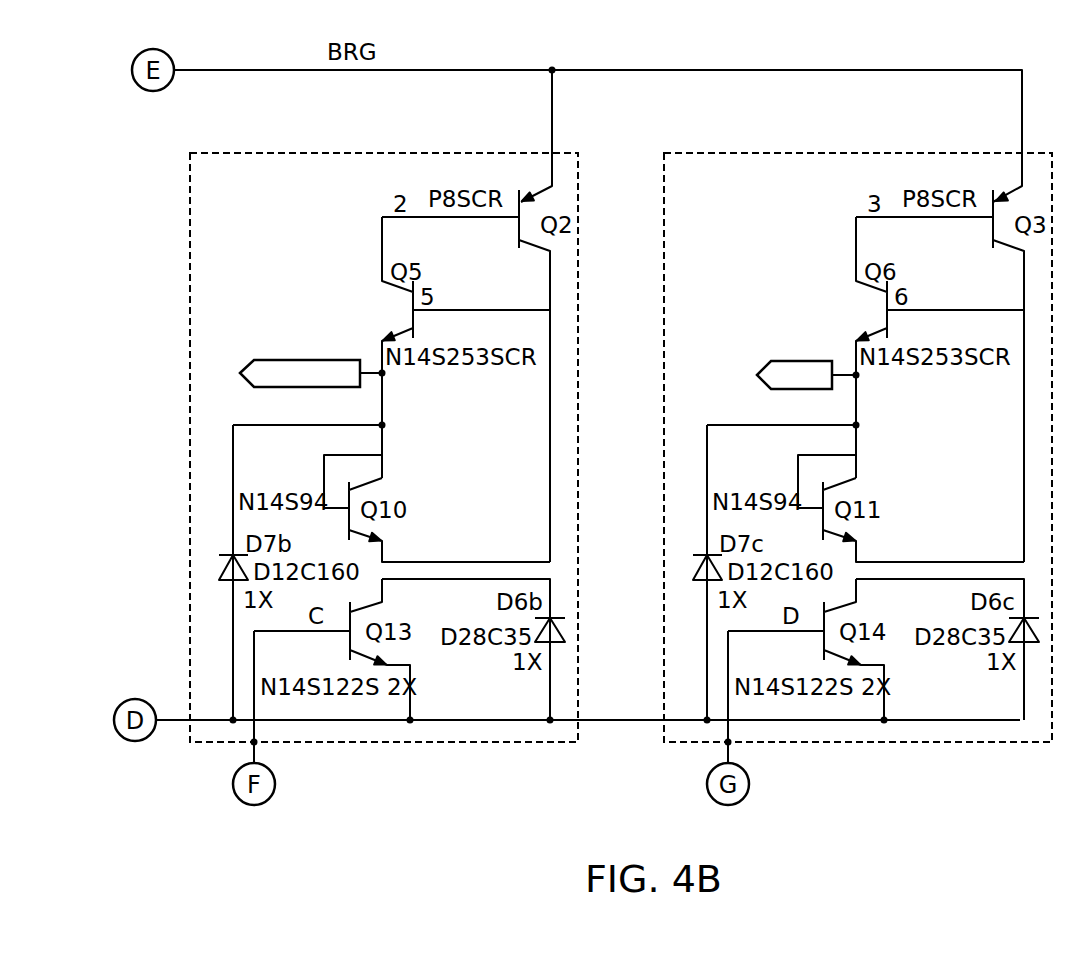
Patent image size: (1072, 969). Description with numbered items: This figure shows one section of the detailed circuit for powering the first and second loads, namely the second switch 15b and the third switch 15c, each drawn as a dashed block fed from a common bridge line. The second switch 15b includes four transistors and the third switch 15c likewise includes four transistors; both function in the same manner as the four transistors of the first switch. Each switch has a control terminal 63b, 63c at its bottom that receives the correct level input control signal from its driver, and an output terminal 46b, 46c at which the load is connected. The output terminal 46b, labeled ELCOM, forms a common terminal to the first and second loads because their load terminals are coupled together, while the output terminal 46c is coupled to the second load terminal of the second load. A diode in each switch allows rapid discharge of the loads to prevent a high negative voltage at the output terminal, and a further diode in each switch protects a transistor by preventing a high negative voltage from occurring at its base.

The second switch 15b is at (342, 152).
The third switch 15c is at (816, 152).
The output terminal 46b is at (384, 376).
The output terminal 46c is at (858, 377).
The control terminal 63b is at (250, 745).
The control terminal 63c is at (724, 745).